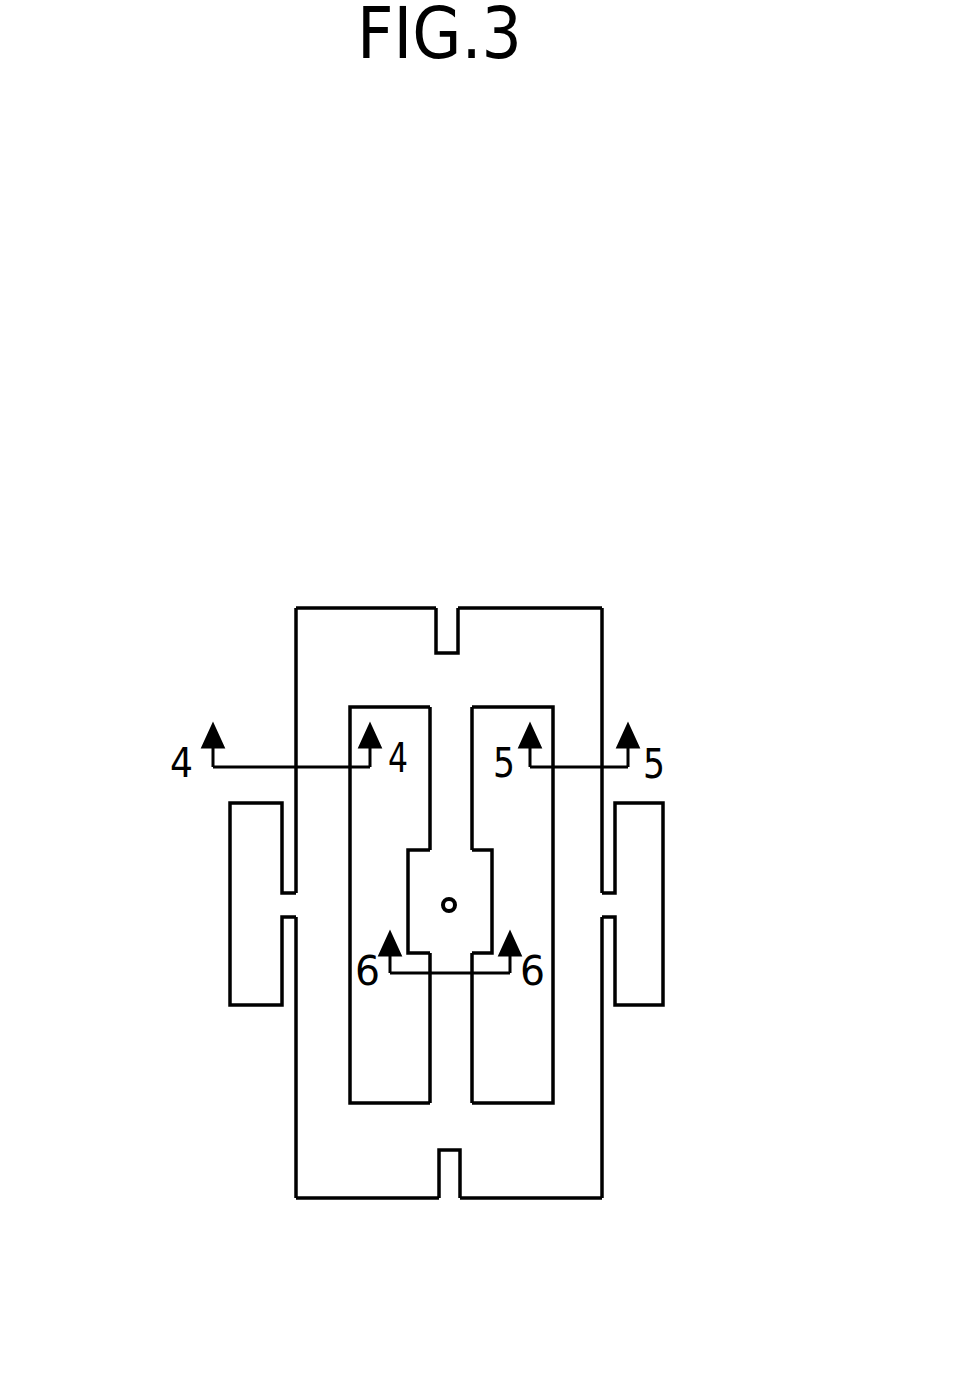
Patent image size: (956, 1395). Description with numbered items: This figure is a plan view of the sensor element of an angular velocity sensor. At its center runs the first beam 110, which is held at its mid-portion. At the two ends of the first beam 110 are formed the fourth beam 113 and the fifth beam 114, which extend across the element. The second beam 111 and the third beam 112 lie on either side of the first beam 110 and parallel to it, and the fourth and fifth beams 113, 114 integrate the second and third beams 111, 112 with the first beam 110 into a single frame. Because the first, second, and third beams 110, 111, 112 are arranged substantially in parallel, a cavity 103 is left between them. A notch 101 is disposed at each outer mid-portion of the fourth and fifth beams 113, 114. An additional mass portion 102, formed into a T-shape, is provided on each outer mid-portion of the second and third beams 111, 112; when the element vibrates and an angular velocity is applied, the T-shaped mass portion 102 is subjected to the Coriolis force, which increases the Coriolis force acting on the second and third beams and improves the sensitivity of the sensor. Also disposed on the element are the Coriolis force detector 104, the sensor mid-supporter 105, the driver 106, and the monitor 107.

The notch 101 is at (445, 633).
The additional mass portion 102 is at (252, 908).
The cavity 103 is at (507, 1070).
The Coriolis force detector 104 is at (450, 1002).
The sensor mid-supporter 105 is at (466, 886).
The driver 106 is at (320, 1023).
The monitor 107 is at (573, 1068).
The first beam 110 is at (455, 742).
The second beam 111 is at (318, 728).
The third beam 112 is at (577, 742).
The fourth beam 113 is at (533, 638).
The fifth beam 114 is at (368, 1187).